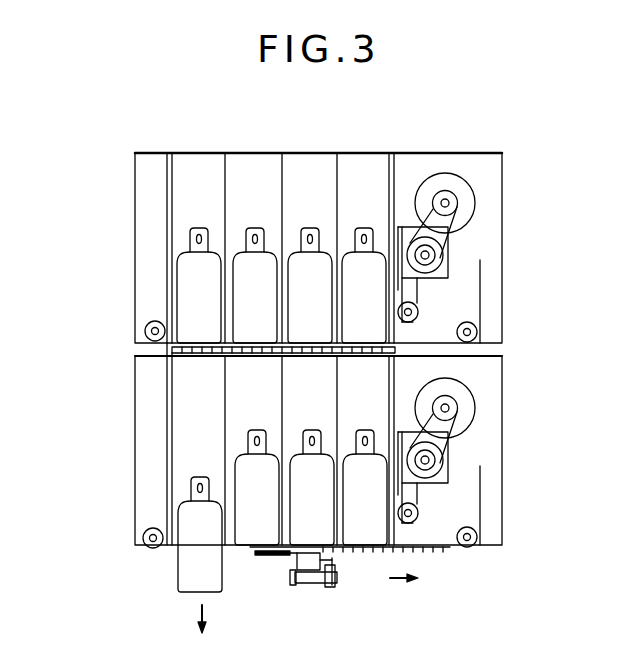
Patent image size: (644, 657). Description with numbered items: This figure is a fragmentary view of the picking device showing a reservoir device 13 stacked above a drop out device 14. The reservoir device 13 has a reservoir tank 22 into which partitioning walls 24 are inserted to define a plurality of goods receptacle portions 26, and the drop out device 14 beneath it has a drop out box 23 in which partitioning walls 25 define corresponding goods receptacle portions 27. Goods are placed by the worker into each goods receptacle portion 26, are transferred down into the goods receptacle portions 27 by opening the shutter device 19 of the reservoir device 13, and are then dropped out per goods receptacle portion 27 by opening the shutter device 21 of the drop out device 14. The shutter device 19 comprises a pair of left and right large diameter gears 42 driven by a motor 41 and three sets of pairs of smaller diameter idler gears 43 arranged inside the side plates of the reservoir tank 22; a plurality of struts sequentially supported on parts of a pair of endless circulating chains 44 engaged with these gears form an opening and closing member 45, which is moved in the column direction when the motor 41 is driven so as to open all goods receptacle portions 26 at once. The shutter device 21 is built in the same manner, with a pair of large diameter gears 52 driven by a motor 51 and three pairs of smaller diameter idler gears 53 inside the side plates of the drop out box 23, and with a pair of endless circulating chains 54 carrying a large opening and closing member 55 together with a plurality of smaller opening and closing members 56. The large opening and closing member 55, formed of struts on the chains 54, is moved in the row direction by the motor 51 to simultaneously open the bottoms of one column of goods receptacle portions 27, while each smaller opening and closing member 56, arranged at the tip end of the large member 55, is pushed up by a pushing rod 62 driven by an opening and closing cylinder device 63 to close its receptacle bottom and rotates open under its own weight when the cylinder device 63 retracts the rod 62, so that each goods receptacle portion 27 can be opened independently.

The reservoir device 13 is at (312, 231).
The drop out device 14 is at (317, 492).
The shutter device 19 is at (185, 358).
The shutter device 21 is at (434, 556).
The reservoir tank 22 is at (133, 281).
The drop out box 23 is at (133, 485).
The partitioning wall 24 is at (337, 167).
The partitioning wall 25 is at (330, 382).
The goods receptacle portion 26 is at (324, 214).
The goods receptacle portion 27 is at (329, 424).
The motor 41 is at (448, 253).
The large diameter gear 42 is at (474, 190).
The smaller diameter idler gear 43 is at (145, 328).
The endless circulating chain 44 is at (480, 260).
The opening and closing member 45 is at (248, 354).
The motor 51 is at (450, 458).
The large diameter gear 52 is at (475, 402).
The smaller diameter idler gear 53 is at (152, 552).
The endless circulating chain 54 is at (482, 470).
The large opening and closing member 55 is at (392, 552).
The smaller opening and closing member 56 is at (265, 557).
The pushing rod 62 is at (285, 569).
The opening and closing cylinder device 63 is at (303, 585).